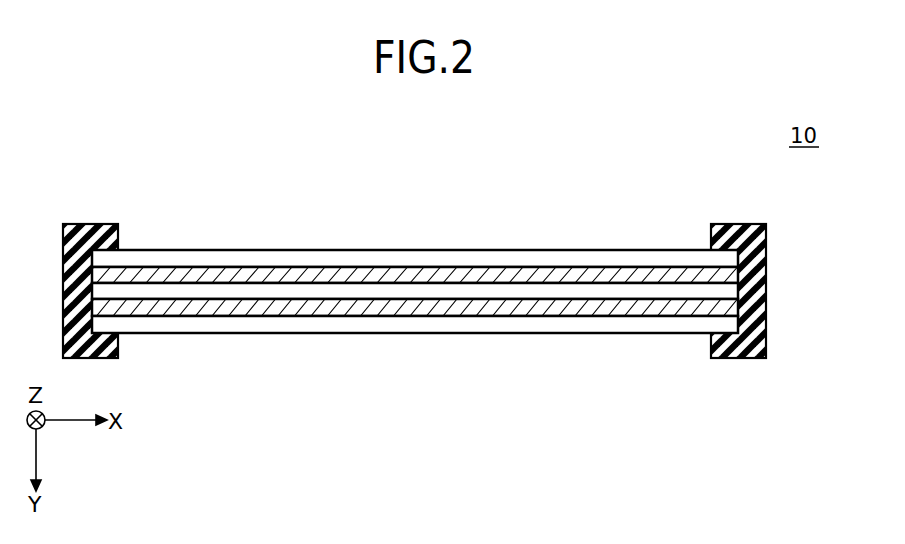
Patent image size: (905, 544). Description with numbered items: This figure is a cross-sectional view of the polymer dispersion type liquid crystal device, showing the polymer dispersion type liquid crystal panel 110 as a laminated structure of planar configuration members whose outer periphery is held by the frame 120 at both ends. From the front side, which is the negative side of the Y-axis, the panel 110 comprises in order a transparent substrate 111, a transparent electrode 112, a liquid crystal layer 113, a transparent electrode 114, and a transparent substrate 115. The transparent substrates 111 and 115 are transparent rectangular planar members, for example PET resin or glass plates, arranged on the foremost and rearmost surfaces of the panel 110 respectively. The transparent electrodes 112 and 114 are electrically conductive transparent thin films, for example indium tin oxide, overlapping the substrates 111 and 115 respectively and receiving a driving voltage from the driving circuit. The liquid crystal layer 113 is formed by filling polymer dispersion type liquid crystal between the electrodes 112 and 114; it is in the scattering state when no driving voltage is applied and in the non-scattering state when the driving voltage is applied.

The polymer dispersion type liquid crystal panel 110 is at (409, 288).
The transparent substrate 111 is at (423, 257).
The transparent electrode 112 is at (485, 275).
The liquid crystal layer 113 is at (549, 292).
The transparent electrode 114 is at (613, 303).
The transparent substrate 115 is at (675, 323).
The frame 120 is at (90, 224).